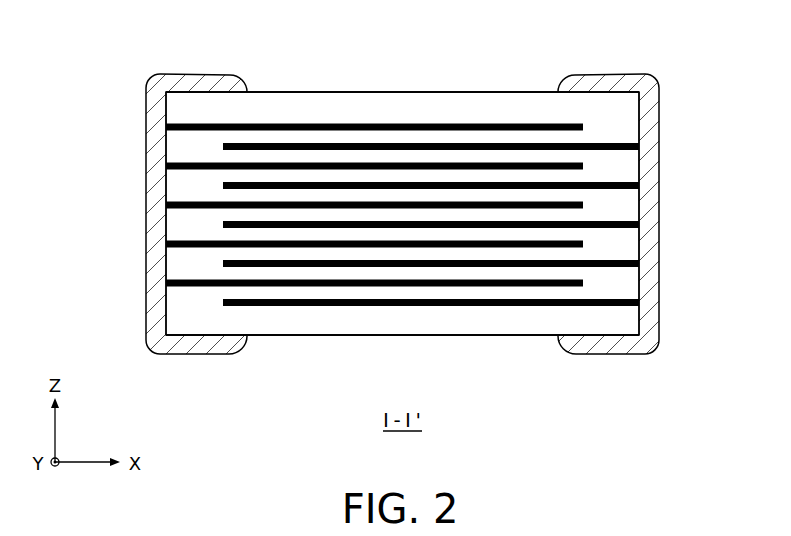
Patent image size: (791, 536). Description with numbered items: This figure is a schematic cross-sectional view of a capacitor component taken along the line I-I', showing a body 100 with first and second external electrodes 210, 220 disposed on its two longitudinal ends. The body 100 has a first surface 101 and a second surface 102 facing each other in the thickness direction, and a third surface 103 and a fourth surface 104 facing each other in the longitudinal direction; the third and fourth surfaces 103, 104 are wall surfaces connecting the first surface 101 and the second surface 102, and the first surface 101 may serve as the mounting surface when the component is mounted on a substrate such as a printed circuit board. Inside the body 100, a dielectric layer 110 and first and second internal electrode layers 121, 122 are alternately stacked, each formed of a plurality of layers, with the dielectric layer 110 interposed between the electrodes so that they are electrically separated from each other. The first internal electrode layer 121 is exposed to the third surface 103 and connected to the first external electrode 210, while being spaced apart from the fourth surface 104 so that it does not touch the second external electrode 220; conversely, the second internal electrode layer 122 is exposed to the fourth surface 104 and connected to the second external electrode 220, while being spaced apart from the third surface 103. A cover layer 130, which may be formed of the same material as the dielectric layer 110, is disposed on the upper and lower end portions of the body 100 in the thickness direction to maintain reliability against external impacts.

The body 100 is at (553, 68).
The first surface 101 is at (274, 335).
The second surface 102 is at (260, 92).
The third surface 103 is at (166, 110).
The fourth surface 104 is at (639, 110).
The dielectric layer 110 is at (465, 136).
The first internal electrode layer 121 is at (317, 126).
The second internal electrode layer 122 is at (372, 141).
The cover layer 130 is at (522, 100).
The first external electrode 210 is at (157, 240).
The second external electrode 220 is at (647, 240).